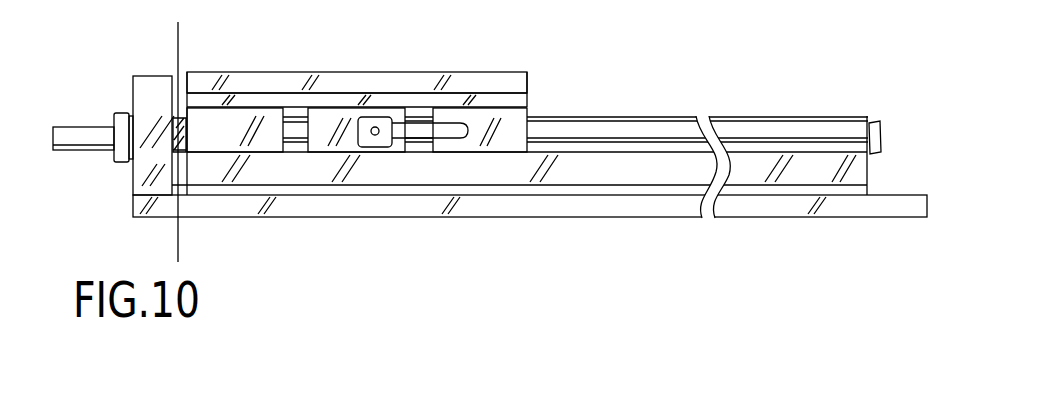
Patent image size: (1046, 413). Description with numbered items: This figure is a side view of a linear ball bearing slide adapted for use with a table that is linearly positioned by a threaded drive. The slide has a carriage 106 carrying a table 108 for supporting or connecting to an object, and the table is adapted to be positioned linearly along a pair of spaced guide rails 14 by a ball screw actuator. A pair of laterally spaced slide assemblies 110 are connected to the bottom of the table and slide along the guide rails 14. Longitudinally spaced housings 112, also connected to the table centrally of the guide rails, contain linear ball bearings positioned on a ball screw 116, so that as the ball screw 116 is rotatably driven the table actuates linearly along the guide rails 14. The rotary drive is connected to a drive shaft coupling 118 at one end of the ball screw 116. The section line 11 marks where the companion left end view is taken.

The section line 11- 11 is at (205, 262).
The guide rails 14 is at (745, 117).
The carriage 106 is at (530, 73).
The table 108 is at (352, 72).
The slide assemblies 110 is at (330, 152).
The housings 112 is at (218, 152).
The ball screw 116 is at (878, 118).
The drive shaft coupling 118 is at (100, 93).